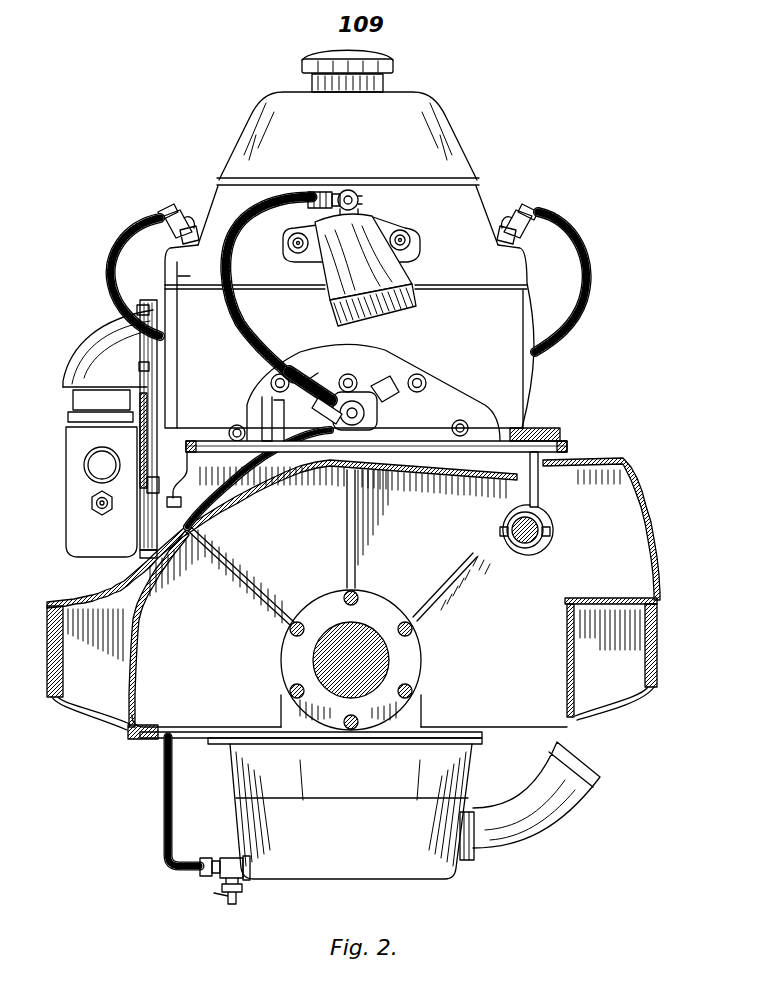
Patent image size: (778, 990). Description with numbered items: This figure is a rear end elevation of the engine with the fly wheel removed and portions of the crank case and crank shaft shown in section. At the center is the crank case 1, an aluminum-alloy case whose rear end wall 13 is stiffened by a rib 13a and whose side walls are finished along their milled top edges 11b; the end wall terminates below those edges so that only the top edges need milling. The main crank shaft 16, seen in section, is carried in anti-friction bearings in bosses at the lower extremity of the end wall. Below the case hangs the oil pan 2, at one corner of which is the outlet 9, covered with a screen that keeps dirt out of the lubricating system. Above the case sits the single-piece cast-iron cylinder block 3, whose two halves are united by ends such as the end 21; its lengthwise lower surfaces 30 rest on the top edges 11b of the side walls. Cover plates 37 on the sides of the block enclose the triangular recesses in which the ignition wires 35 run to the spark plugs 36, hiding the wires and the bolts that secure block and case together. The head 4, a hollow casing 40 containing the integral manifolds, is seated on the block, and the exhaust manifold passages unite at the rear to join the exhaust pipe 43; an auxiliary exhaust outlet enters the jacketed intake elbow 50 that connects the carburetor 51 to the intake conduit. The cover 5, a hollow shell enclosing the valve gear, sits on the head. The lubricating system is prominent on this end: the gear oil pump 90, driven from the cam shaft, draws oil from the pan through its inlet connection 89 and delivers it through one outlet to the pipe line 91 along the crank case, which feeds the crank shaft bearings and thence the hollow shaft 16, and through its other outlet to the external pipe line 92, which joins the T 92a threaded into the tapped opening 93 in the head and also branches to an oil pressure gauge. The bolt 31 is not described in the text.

The crank case 1 is at (353, 598).
The oil pan 2 is at (404, 808).
The cylinder block 3 is at (373, 386).
The head 4 is at (349, 327).
The cover 5 is at (348, 117).
The outlet 9 is at (242, 857).
The top edges of side walls 11b is at (190, 278).
The rear end wall 13 is at (435, 575).
The rib 13a is at (237, 571).
The main crank shaft 16 is at (370, 660).
The end of block 21 is at (346, 301).
The lower surfaces of block 30 is at (518, 413).
The bolt 31 is at (348, 395).
The ignition wires 35 is at (587, 272).
The spark plugs 36 is at (520, 207).
The cover plates 37 is at (533, 370).
The hollow casing 40 is at (250, 190).
The exhaust pipe 43 is at (322, 296).
The jacketed intake elbow 50 is at (90, 340).
The carburetor 51 is at (70, 493).
The inlet connection 89 is at (378, 393).
The gear oil pump 90 is at (385, 405).
The pipe line 91 is at (312, 406).
The pipe line 92 is at (266, 346).
The T 92a is at (360, 200).
The tapped opening 93 is at (348, 189).